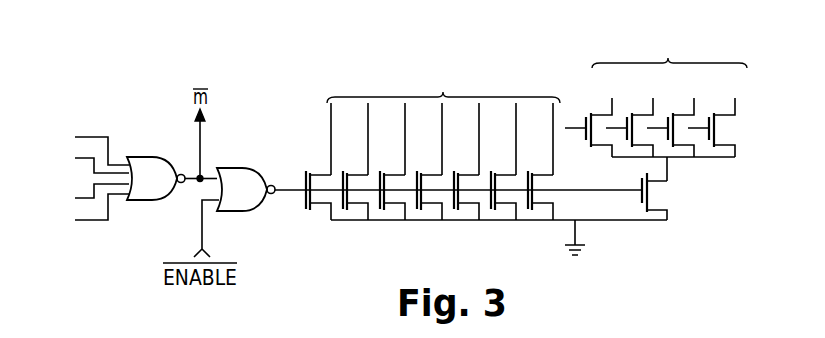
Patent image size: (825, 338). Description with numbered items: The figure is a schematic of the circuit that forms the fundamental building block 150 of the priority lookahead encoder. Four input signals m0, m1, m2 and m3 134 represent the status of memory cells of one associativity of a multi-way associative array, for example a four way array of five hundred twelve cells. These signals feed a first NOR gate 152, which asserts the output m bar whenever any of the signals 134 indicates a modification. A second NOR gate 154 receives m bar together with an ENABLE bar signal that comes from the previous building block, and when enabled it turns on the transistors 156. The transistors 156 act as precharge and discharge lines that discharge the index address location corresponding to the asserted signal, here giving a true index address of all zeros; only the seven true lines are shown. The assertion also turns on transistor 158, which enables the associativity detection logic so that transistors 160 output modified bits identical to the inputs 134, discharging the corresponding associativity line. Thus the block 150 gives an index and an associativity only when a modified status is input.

The signals m0, m1, m2, and m3 134 is at (88, 157).
The fundamental building block 150 is at (378, 234).
The first NOR gate 152 is at (137, 202).
The second NOR gate 154 is at (233, 212).
The transistors 156 is at (343, 189).
The transistor 158 is at (638, 203).
The transistors 160 is at (638, 134).